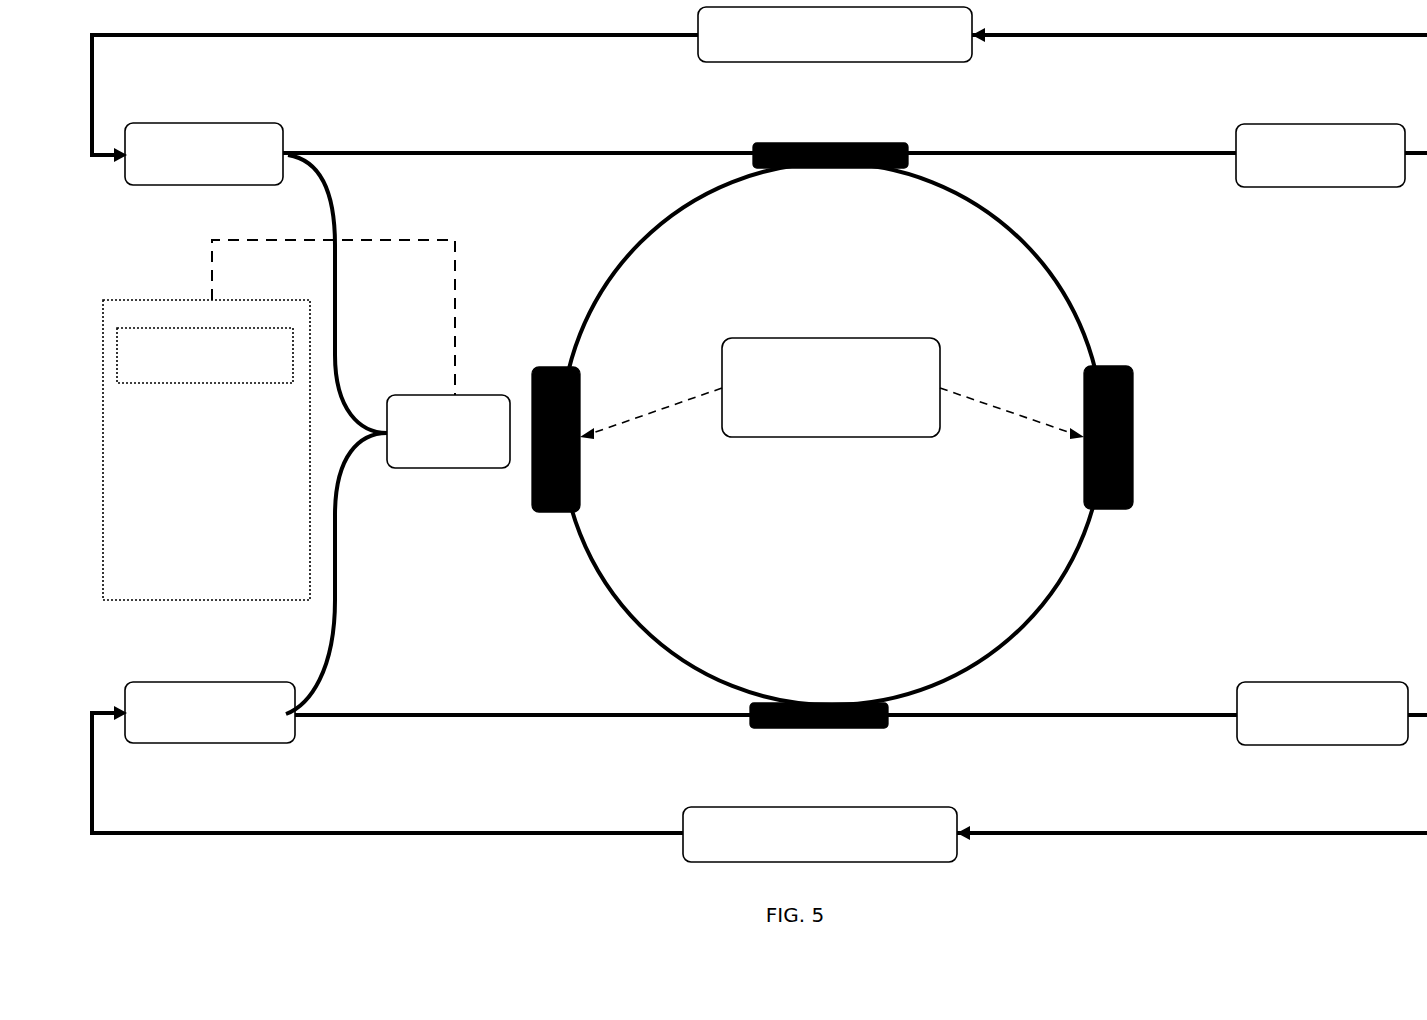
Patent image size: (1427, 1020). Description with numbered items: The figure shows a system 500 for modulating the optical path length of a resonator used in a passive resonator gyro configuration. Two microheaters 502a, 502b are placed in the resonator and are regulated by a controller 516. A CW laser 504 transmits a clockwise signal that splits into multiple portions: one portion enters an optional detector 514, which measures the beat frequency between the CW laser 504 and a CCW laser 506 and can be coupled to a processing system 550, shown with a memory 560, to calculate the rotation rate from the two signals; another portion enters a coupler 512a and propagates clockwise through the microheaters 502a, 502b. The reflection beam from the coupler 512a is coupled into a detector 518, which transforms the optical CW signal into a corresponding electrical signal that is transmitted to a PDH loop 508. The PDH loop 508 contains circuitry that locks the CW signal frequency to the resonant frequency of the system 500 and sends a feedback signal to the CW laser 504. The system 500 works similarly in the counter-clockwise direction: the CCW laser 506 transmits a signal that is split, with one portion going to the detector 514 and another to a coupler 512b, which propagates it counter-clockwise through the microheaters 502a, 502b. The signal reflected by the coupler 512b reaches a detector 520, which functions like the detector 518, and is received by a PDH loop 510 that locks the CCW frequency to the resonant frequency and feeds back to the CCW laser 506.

The system 500 is at (1382, 338).
The microheater 502a is at (1119, 507).
The microheater 502b is at (574, 487).
The CW laser 504 is at (203, 187).
The CCW laser 506 is at (188, 681).
The PDH loop 508 is at (907, 64).
The PDH loop 510 is at (698, 805).
The coupler 512a is at (805, 170).
The coupler 512b is at (822, 729).
The detector 514 is at (433, 469).
The controller 516 is at (722, 347).
The detector 518 is at (1306, 188).
The detector 520 is at (1304, 681).
The processing system 550 is at (178, 298).
The memory 560 is at (205, 355).